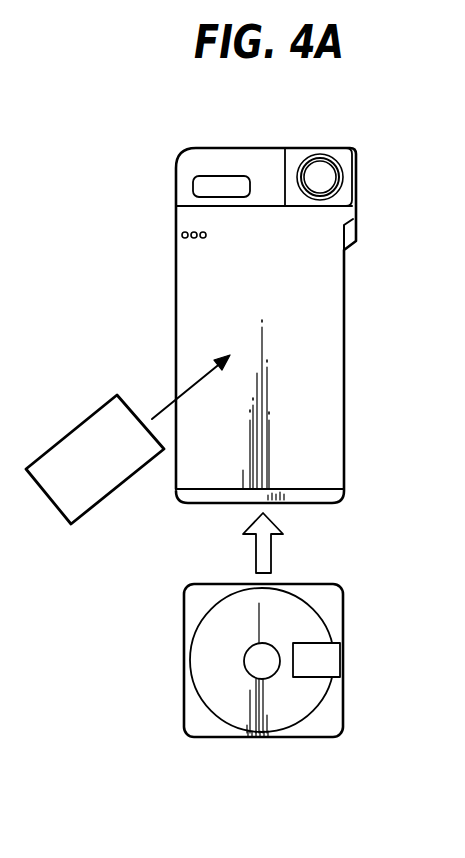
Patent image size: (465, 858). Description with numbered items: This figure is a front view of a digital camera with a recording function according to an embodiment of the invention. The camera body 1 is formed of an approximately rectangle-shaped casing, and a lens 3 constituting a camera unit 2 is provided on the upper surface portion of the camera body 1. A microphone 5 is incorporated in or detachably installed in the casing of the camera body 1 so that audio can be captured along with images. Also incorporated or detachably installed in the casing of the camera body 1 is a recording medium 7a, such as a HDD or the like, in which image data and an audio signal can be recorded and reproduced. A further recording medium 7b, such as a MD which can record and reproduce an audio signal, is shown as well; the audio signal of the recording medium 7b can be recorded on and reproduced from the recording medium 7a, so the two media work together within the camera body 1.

The camera body 1 is at (266, 310).
The camera unit 2 is at (352, 158).
The lens 3 is at (320, 166).
The microphone 5 is at (183, 230).
The recording medium 7a is at (322, 608).
The recording medium 7b is at (63, 487).